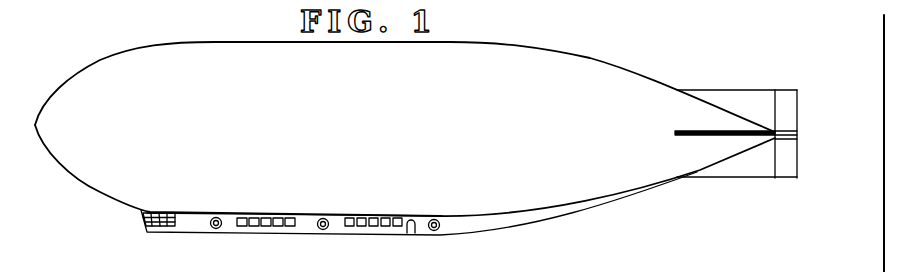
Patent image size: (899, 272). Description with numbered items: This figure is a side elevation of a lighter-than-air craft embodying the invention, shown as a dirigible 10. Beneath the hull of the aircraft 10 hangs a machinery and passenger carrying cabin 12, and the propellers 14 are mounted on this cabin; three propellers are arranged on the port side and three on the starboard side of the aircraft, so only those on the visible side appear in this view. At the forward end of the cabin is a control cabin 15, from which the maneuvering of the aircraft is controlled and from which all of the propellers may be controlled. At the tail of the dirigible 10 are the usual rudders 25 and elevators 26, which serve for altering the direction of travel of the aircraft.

The dirigible 10 is at (64, 82).
The machinery and passenger carrying cabin 12 is at (297, 229).
The propellers 14 is at (222, 228).
The control cabin 15 is at (143, 222).
The rudders 25 is at (786, 91).
The elevators 26 is at (786, 129).